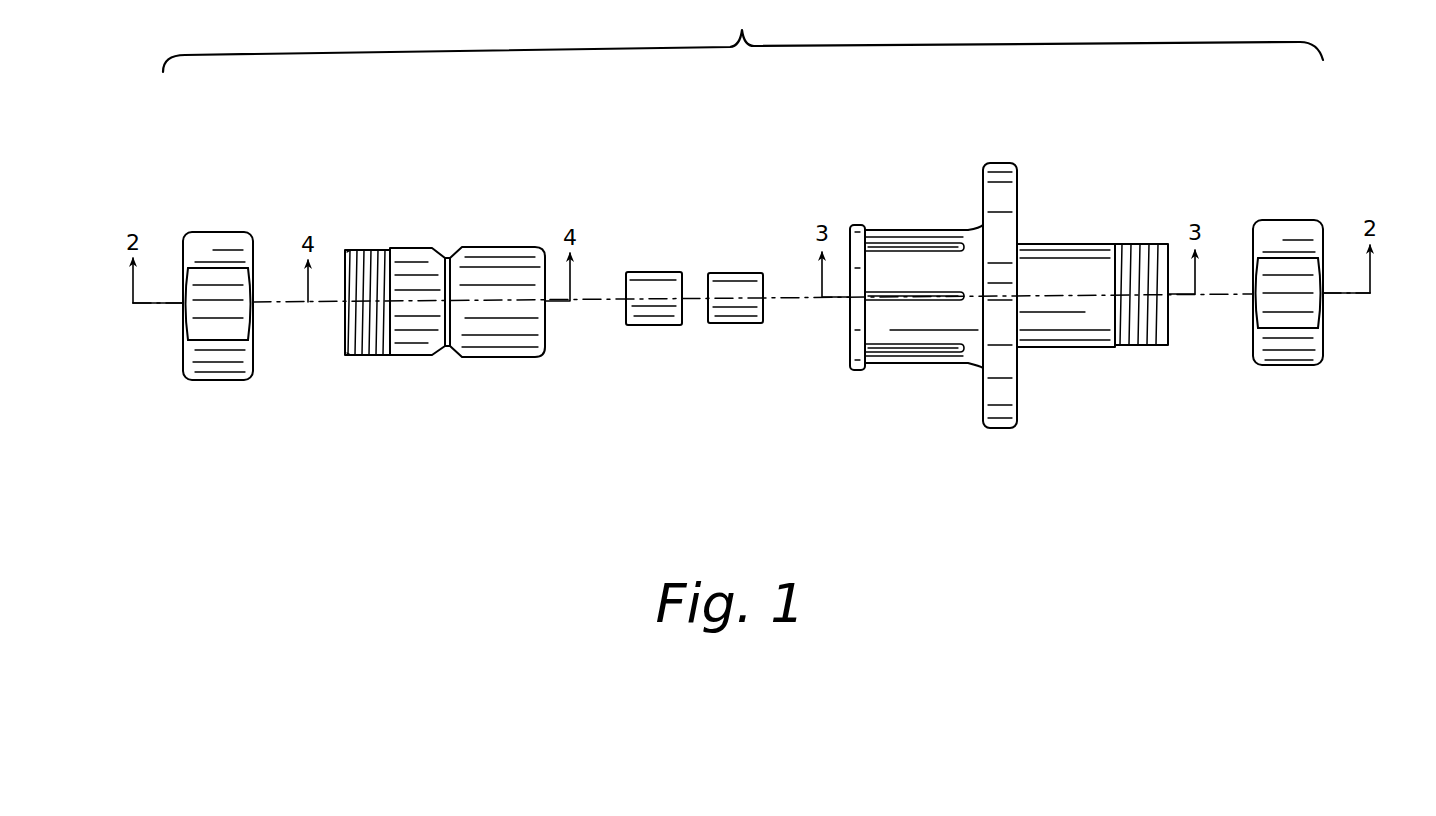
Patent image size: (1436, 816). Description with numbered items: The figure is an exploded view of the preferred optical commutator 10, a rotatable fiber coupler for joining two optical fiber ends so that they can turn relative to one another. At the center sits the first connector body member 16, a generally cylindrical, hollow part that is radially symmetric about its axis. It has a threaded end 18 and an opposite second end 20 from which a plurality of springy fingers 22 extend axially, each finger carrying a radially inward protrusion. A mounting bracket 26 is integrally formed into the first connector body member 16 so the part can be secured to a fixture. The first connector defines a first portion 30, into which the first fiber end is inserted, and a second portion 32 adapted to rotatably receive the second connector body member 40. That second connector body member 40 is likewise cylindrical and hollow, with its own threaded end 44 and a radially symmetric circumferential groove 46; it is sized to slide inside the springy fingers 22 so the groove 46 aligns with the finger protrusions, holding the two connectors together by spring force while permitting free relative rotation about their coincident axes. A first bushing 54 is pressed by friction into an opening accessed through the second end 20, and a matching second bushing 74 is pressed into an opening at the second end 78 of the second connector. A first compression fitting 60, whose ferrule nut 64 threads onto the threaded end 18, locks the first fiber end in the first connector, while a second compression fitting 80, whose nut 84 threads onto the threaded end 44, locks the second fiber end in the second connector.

The optical commutator 10 is at (743, 36).
The first connector body member 16 is at (933, 375).
The threaded end 18 is at (1140, 244).
The second end 20 is at (960, 305).
The springy fingers 22 is at (892, 345).
The mounting bracket 26 is at (1025, 188).
The first portion 30 is at (1060, 370).
The second portion 32 is at (897, 385).
The second connector body member 40 is at (464, 295).
The threaded end 44 is at (367, 250).
The circumferential groove 46 is at (448, 250).
The first bushing 54 is at (737, 323).
The first compression fitting 60 is at (1287, 333).
The ferrule nut 64 is at (1325, 328).
The second bushing 74 is at (653, 272).
The second end 78 is at (527, 390).
The second compression fitting 80 is at (237, 317).
The nut 84 is at (212, 232).